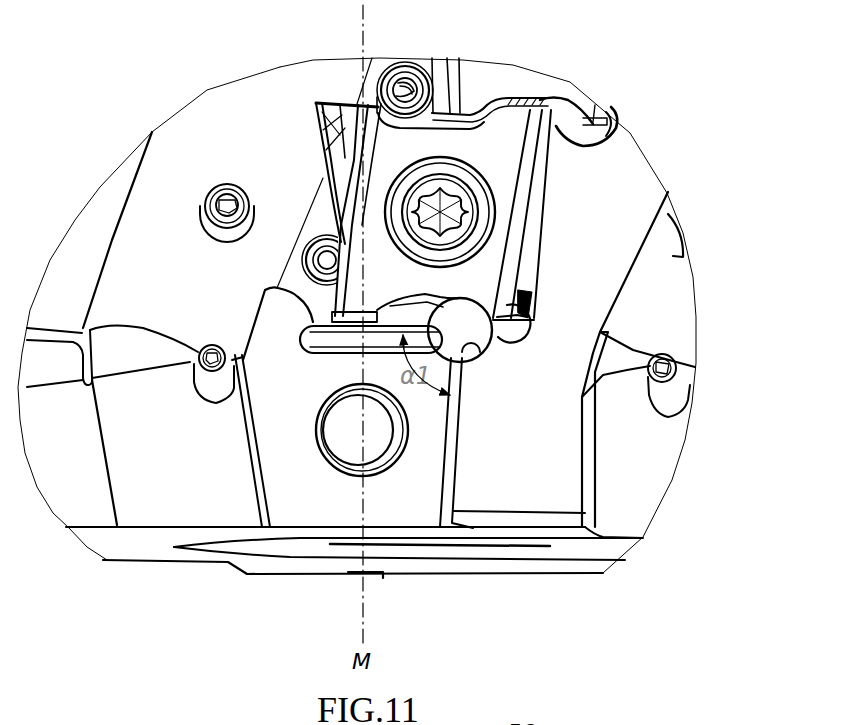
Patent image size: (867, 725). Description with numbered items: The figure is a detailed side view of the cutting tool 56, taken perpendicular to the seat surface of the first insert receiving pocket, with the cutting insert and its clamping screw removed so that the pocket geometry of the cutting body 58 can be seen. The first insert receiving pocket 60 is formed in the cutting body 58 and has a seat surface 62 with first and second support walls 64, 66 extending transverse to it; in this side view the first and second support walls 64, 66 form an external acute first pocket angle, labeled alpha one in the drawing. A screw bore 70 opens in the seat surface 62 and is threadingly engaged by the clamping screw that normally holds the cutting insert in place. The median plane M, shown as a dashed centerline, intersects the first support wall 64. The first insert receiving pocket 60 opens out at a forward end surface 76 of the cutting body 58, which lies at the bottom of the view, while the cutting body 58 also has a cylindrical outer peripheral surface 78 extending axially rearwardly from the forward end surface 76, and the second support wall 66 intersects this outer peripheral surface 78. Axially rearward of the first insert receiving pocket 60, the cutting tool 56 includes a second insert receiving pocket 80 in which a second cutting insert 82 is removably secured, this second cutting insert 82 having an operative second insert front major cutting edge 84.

The cutting tool 56 is at (563, 70).
The cutting body 58 is at (227, 133).
The second cutting insert 82 is at (498, 158).
The second insert receiving pocket 80 is at (412, 307).
The second insert front major cutting edge 84 is at (303, 246).
The first support wall 64 is at (335, 330).
The seat surface 62 is at (323, 512).
The outer peripheral surface 78 is at (537, 484).
The first insert receiving pocket 60 is at (282, 450).
The screw bore 70 is at (353, 448).
The second support wall 66 is at (453, 468).
The forward end surface 76 is at (133, 543).